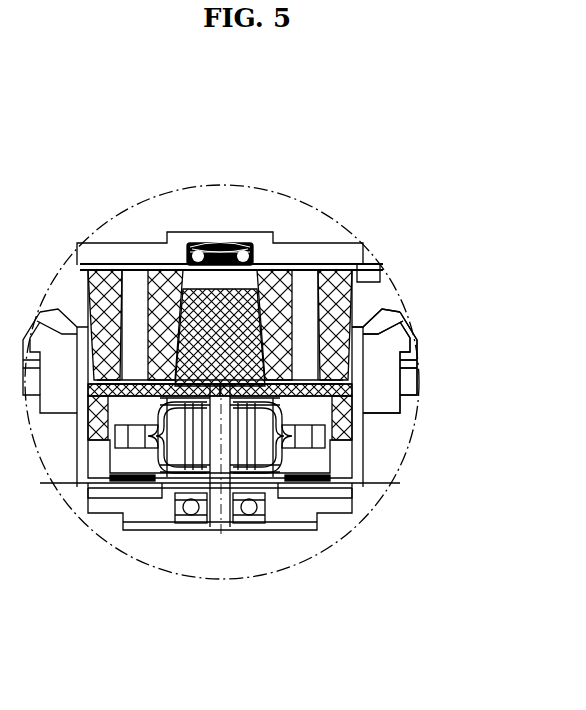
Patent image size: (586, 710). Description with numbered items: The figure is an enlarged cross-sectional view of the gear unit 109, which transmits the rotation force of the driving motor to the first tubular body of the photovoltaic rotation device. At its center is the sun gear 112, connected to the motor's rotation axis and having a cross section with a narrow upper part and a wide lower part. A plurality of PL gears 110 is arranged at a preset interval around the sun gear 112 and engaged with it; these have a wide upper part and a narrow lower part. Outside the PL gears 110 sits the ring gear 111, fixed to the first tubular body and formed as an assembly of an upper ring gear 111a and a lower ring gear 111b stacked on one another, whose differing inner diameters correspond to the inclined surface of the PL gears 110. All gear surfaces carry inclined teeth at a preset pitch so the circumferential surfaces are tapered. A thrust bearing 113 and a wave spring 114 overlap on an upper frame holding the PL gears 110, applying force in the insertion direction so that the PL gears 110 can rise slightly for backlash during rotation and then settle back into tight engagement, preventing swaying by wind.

The gear unit 109 is at (196, 131).
The PL gears 110 is at (335, 292).
The ring gear 111 is at (446, 247).
The upper ring gear 111a is at (358, 352).
The lower ring gear 111b is at (380, 319).
The sun gear 112 is at (193, 313).
The thrust bearing 113 is at (213, 243).
The wave spring 114 is at (233, 243).